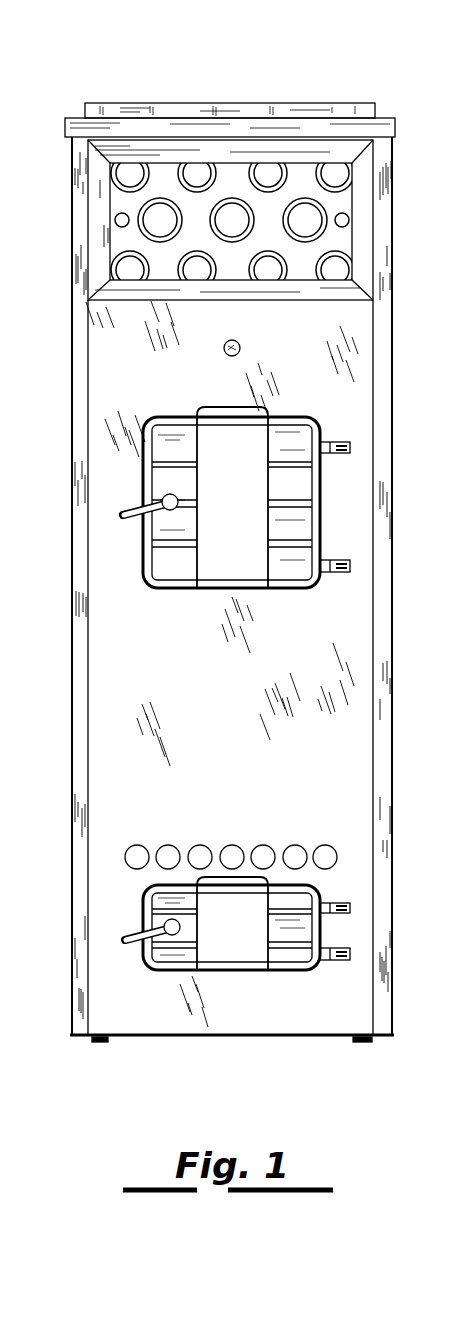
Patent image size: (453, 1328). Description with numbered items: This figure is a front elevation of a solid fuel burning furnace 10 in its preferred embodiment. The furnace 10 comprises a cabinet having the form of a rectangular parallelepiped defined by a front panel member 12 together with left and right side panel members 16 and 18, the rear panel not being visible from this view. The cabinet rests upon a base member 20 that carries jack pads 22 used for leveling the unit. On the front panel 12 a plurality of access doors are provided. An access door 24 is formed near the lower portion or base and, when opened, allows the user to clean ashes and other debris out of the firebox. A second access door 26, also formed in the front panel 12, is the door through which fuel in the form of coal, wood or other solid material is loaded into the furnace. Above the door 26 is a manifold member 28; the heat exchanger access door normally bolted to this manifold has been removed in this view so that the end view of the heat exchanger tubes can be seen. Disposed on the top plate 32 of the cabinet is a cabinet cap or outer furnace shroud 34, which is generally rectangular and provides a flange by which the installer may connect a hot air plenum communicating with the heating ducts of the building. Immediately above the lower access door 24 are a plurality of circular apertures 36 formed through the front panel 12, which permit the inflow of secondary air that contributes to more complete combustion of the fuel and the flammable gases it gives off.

The furnace 10 is at (72, 204).
The front panel member 12 is at (127, 706).
The left side panel member 16 is at (72, 577).
The right side panel member 18 is at (392, 575).
The base member 20 is at (202, 1035).
The jack pads 22 is at (98, 1043).
The access door 24 is at (237, 970).
The access door 26 is at (222, 588).
The manifold member 28 is at (255, 300).
The top plate 32 is at (70, 115).
The cabinet cap 34 is at (210, 103).
The circular apertures 36 is at (197, 845).